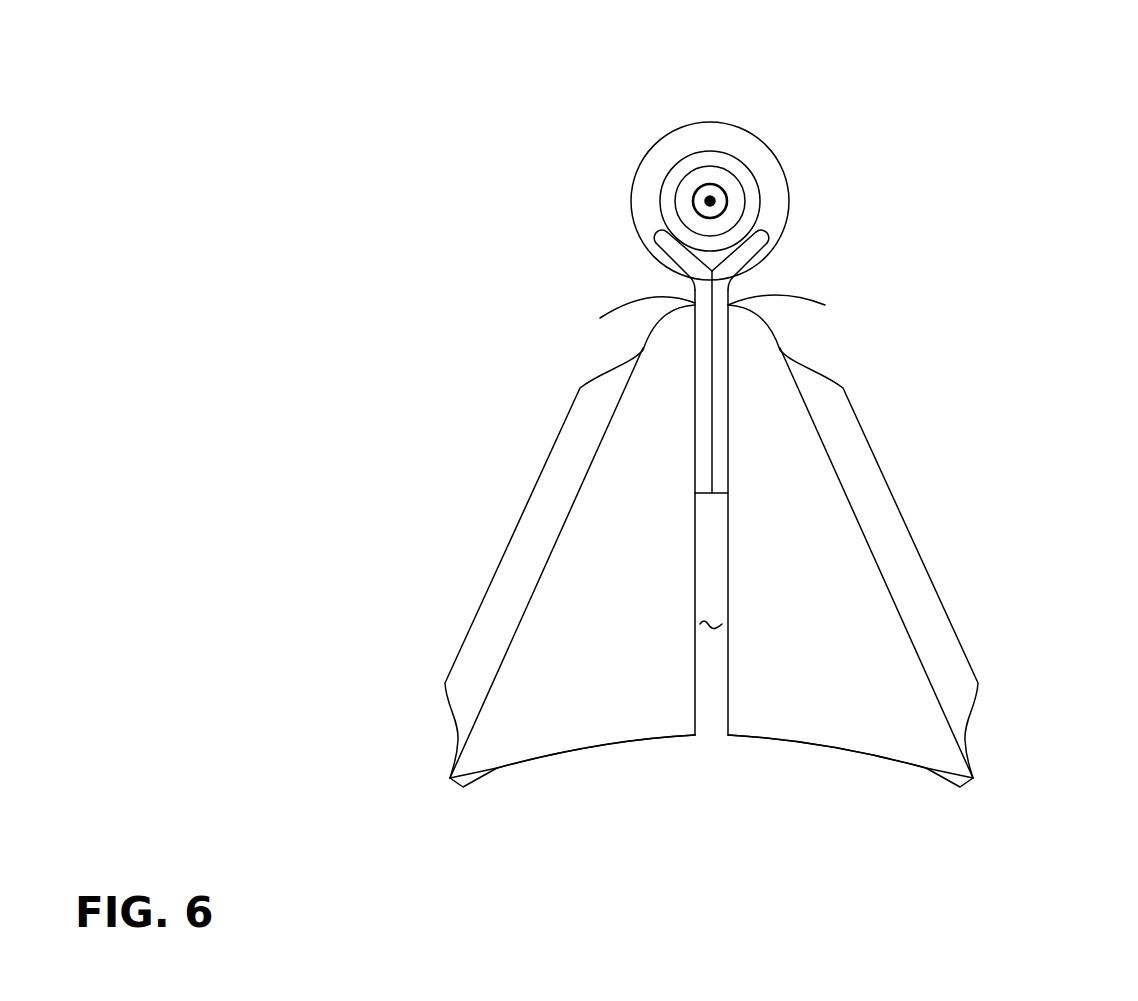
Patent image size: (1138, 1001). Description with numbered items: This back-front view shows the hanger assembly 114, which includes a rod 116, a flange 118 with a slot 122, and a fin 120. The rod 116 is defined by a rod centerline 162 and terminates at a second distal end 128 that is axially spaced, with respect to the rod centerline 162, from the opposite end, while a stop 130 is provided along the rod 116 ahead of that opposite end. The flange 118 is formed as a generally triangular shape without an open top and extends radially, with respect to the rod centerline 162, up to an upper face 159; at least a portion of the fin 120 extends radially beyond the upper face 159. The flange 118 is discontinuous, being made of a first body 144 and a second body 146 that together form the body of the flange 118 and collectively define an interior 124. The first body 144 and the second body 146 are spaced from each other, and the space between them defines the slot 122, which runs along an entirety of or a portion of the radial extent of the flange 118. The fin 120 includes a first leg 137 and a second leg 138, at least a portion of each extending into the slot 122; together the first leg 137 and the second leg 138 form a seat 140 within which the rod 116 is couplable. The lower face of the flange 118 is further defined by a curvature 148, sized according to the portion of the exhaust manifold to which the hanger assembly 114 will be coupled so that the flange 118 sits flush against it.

The hanger assembly 114 is at (484, 40).
The rod 116 is at (760, 190).
The flange 118 is at (768, 580).
The fin 120 is at (694, 370).
The slot 122 is at (728, 530).
The interior 124 is at (708, 625).
The second distal end 128 is at (758, 209).
The stop 130 is at (760, 140).
The first leg 137 is at (695, 281).
The second leg 138 is at (728, 283).
The seat 140 is at (712, 262).
The first body 144 is at (528, 492).
The second body 146 is at (927, 560).
The curvature 148 is at (617, 743).
The upper face 159 is at (716, 321).
The rod centerline 162 is at (725, 193).